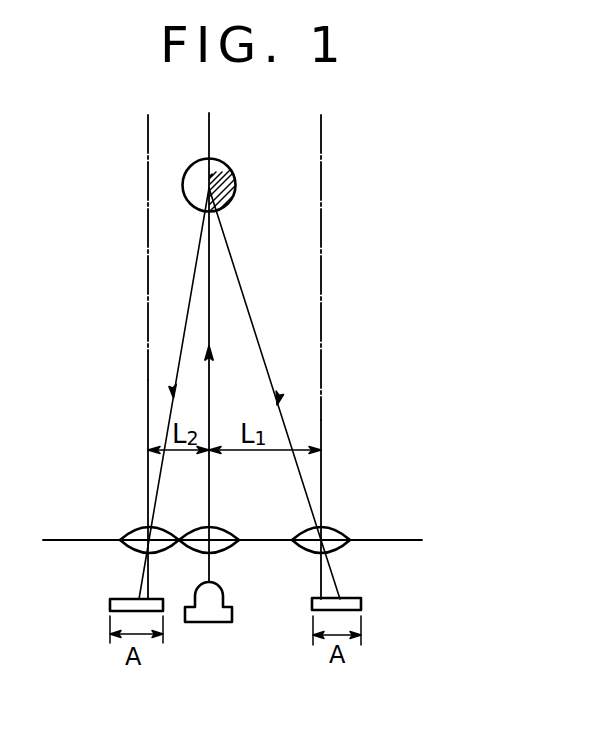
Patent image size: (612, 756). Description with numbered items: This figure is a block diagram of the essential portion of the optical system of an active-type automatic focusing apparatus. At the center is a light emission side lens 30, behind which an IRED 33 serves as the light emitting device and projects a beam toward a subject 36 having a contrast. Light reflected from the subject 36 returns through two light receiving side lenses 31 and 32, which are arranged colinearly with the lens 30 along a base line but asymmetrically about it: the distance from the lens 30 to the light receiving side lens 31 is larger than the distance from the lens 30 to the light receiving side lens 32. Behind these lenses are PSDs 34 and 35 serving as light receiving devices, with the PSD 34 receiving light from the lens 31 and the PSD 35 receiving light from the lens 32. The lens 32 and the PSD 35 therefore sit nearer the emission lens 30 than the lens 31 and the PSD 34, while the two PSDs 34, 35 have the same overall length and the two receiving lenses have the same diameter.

The light emission side lens 30 is at (225, 528).
The light receiving side lens 31 is at (342, 528).
The light receiving side lens 32 is at (130, 530).
The IRED 33 is at (222, 623).
The PSD 34 is at (361, 604).
The PSD 35 is at (110, 605).
The subject 36 is at (230, 170).